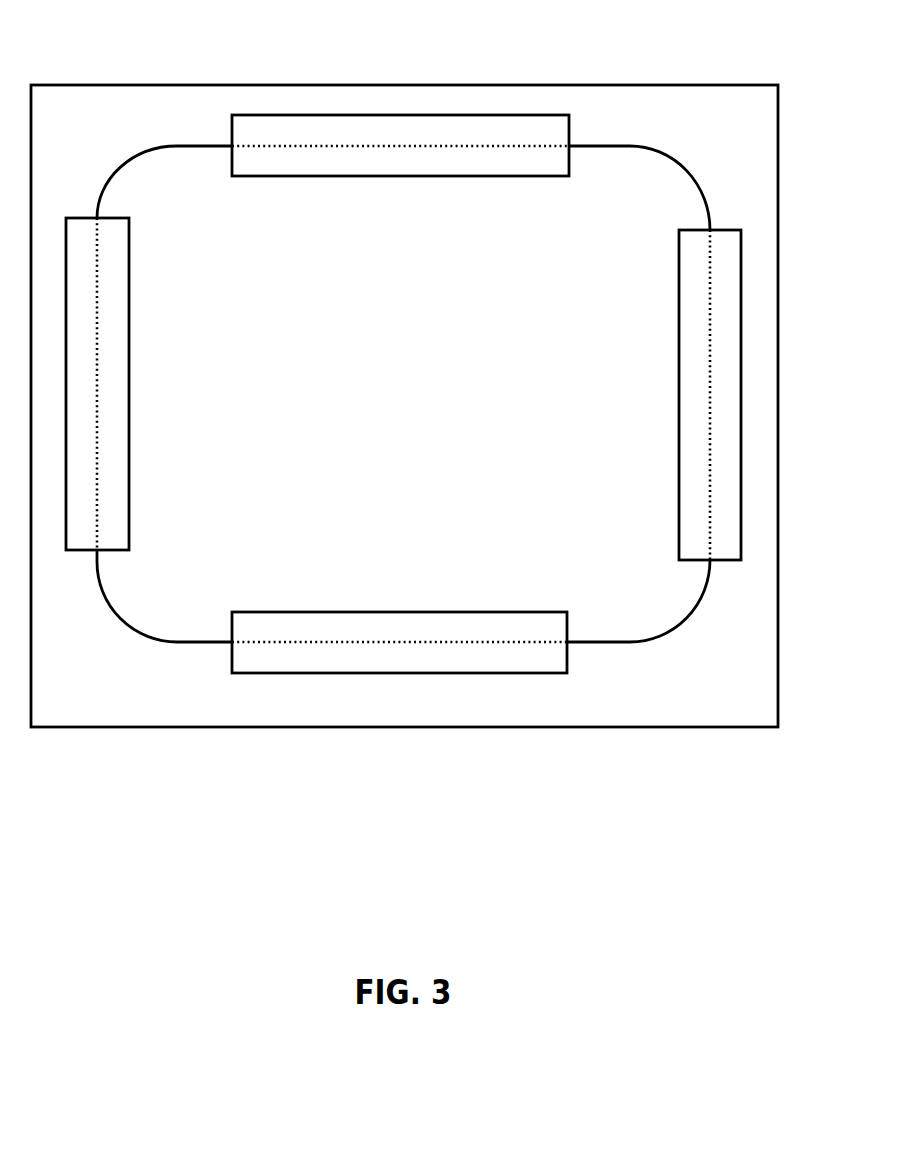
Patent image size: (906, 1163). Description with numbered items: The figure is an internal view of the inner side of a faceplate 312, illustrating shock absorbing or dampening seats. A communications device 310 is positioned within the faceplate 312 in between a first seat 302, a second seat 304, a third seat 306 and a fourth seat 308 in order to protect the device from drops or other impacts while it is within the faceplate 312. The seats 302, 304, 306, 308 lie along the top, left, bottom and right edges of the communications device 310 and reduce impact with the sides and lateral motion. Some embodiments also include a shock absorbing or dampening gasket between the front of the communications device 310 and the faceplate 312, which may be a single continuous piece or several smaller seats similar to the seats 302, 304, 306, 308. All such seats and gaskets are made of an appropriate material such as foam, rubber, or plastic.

The shock absorbing seat 302 is at (263, 133).
The shock absorbing seat 304 is at (110, 352).
The shock absorbing seat 306 is at (263, 630).
The shock absorbing seat 308 is at (698, 520).
The communications device 310 is at (380, 382).
The faceplate 312 is at (117, 100).